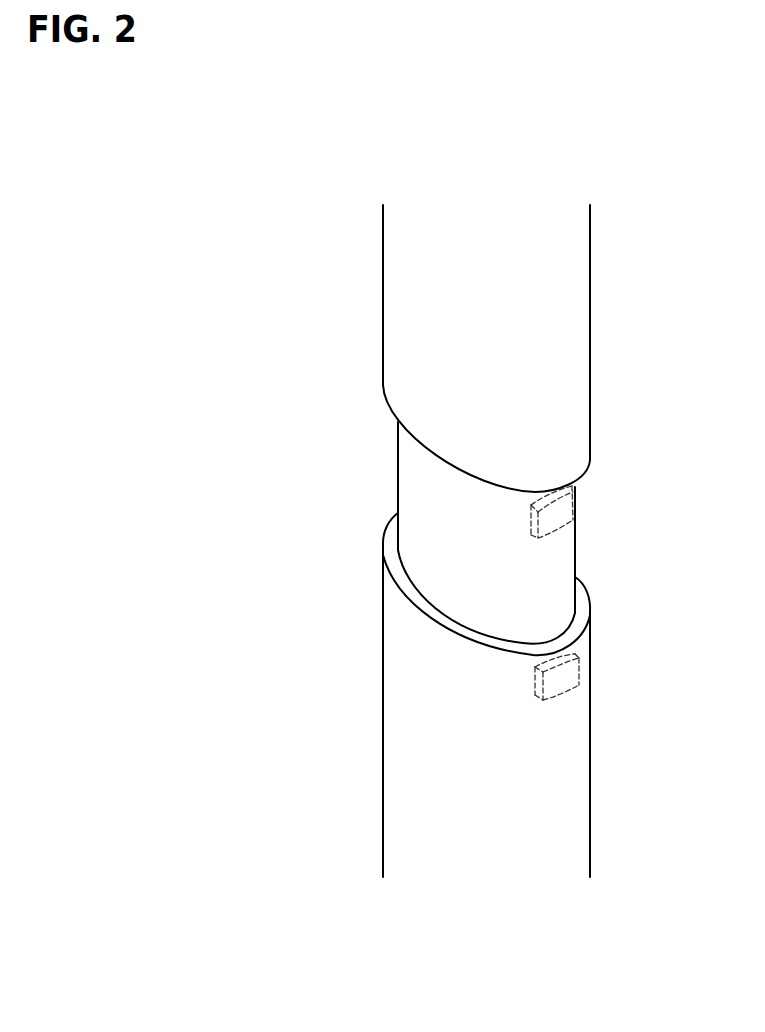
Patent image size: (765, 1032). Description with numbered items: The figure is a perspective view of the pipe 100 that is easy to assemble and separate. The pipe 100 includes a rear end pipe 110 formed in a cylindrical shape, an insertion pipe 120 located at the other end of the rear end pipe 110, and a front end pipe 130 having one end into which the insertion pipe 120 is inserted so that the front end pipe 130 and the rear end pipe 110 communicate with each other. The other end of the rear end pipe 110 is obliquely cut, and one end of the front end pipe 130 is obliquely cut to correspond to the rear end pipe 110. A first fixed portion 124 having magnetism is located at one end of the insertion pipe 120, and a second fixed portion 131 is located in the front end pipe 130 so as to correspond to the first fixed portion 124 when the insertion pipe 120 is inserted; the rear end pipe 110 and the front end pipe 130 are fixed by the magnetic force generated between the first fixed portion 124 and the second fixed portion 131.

The pipe 100 is at (464, 117).
The rear end pipe 110 is at (562, 325).
The insertion pipe 120 is at (427, 485).
The first fixed portion 124 is at (560, 513).
The front end pipe 130 is at (562, 797).
The second fixed portion 131 is at (563, 682).